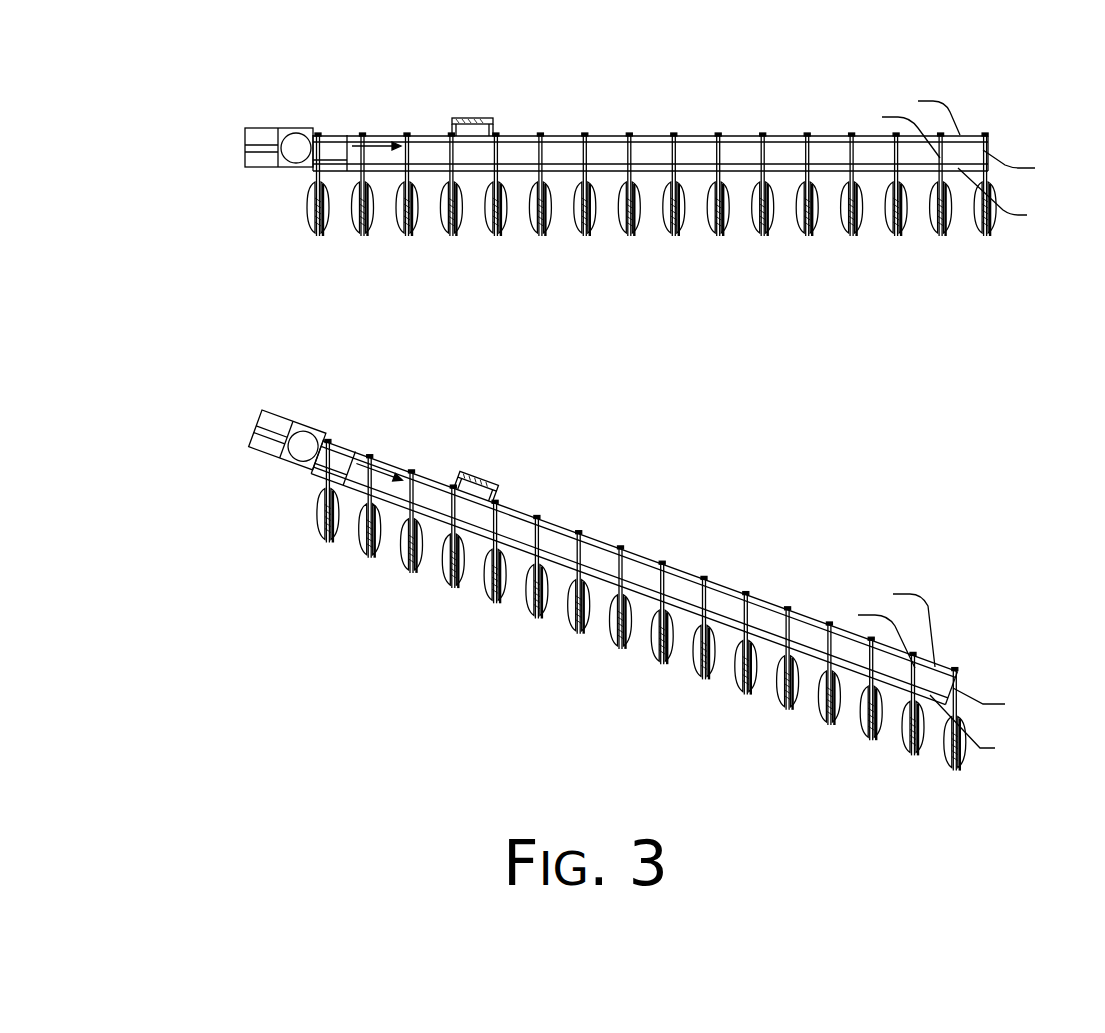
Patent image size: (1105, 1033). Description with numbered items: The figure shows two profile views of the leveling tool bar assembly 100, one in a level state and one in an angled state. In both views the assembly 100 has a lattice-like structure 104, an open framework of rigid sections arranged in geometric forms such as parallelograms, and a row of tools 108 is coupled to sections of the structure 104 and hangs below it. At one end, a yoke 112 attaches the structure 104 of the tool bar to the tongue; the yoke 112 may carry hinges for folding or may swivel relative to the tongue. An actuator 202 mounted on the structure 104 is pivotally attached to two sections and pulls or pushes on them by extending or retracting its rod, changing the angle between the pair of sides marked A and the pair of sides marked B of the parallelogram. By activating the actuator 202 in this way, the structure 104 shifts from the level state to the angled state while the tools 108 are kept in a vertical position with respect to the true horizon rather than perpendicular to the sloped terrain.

The leveling tool bar assembly 100 is at (565, 419).
The lattice-like structure 104 is at (647, 135).
The tool 108 is at (757, 234).
The yoke 112 is at (282, 170).
The actuator 202 is at (487, 118).